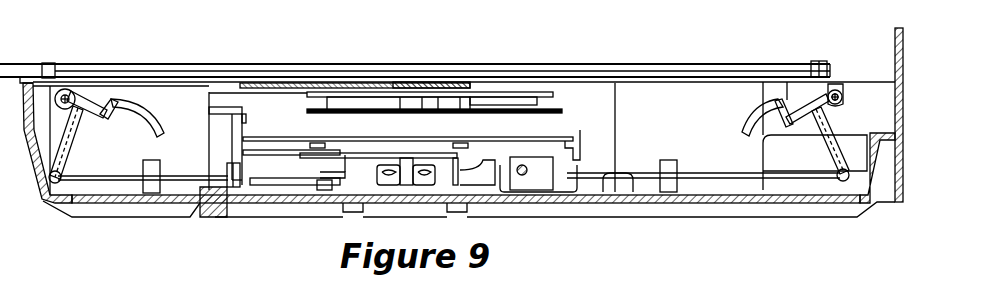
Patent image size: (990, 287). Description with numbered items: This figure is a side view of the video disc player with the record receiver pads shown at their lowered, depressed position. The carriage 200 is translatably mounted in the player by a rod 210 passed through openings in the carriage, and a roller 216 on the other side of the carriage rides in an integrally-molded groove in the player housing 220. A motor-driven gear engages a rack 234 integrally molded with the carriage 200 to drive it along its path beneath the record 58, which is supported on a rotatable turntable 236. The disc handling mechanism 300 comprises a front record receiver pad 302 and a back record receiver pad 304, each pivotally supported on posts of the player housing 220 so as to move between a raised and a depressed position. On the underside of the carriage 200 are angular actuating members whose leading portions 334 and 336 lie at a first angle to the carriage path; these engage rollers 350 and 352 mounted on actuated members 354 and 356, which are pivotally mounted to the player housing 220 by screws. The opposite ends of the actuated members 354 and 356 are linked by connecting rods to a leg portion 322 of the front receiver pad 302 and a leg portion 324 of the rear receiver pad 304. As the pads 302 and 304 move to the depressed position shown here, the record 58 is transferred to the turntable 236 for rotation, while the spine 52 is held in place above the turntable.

The spine 52 is at (824, 60).
The record 58 is at (277, 92).
The carriage 200 is at (577, 150).
The rod 210 is at (542, 168).
The roller 216 is at (216, 208).
The player housing 220 is at (903, 139).
The rack 234 is at (608, 145).
The turntable 236 is at (312, 96).
The disc handling mechanism 300 is at (737, 159).
The front record receiver pad 302 is at (142, 110).
The back record receiver pad 304 is at (760, 105).
The leg portion 322 is at (80, 138).
The leg portion 324 is at (830, 125).
The leading portion 334 is at (405, 152).
The leading portion 336 is at (436, 152).
The roller 350 is at (390, 178).
The roller 352 is at (430, 178).
The actuated member 354 is at (350, 170).
The actuated member 356 is at (458, 155).